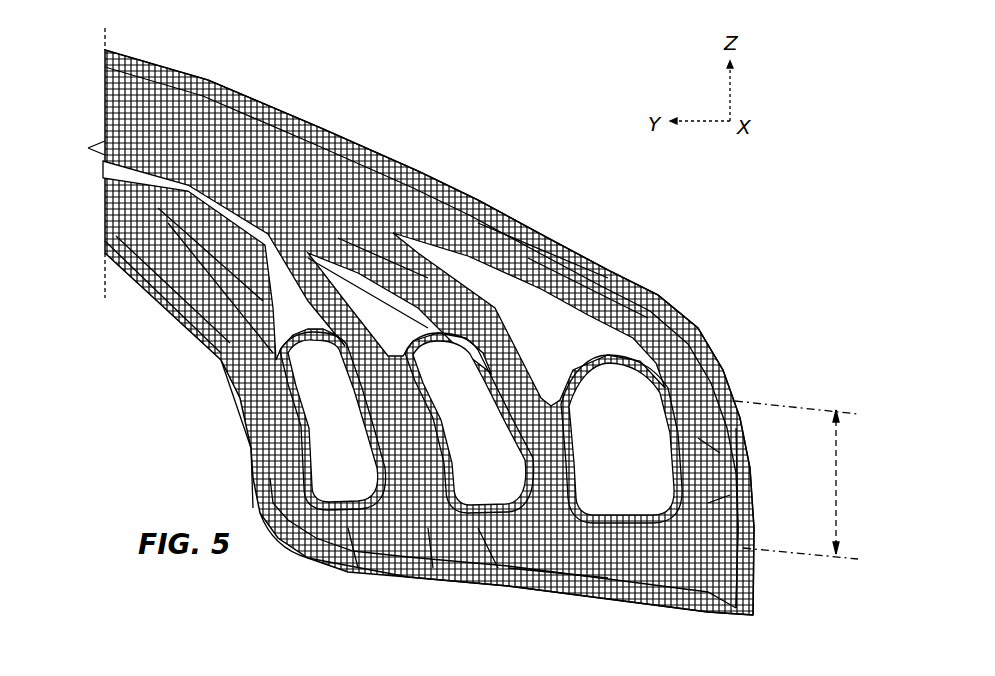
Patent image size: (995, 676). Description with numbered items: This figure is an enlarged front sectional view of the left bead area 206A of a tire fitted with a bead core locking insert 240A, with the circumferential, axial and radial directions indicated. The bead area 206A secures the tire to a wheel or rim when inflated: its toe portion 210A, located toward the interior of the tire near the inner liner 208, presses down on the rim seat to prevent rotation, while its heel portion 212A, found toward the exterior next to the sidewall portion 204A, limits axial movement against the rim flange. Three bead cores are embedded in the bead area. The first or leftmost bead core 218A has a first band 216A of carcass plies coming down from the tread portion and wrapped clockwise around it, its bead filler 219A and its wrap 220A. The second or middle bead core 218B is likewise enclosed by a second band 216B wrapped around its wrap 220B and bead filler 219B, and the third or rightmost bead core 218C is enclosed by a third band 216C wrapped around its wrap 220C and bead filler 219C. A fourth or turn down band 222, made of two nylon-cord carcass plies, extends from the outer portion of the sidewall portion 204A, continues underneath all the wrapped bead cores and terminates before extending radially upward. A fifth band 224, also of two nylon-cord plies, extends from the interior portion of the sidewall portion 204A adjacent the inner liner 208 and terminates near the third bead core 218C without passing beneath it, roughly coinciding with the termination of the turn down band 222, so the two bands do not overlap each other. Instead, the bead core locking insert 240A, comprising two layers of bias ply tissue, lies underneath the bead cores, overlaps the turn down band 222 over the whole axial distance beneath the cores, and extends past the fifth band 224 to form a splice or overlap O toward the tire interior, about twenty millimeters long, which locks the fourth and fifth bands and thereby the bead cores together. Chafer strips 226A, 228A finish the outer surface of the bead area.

The sidewall portion 204A is at (118, 276).
The left bead area 206A is at (231, 378).
The inner liner 208 is at (515, 217).
The toe portion 210A is at (712, 606).
The heel portion 212A is at (280, 523).
The first band of carcass plies 216A is at (347, 547).
The second band of carcass plies 216B is at (472, 555).
The third band of carcass plies 216C is at (700, 432).
The first bead core 218A is at (370, 436).
The second bead core 218B is at (500, 436).
The third bead core 218C is at (650, 453).
The bead filler 219A is at (253, 294).
The bead filler 219B is at (357, 270).
The bead filler 219C is at (547, 323).
The bead core wrap 220A is at (270, 340).
The bead core wrap 220B is at (421, 330).
The bead core wrap 220C is at (590, 347).
The turn down band 222 is at (267, 430).
The fifth band 224 is at (700, 495).
The chafer strip 226A is at (553, 580).
The chafer strip 228A is at (620, 587).
The bead core locking insert 240A is at (423, 578).
The splice O is at (830, 487).